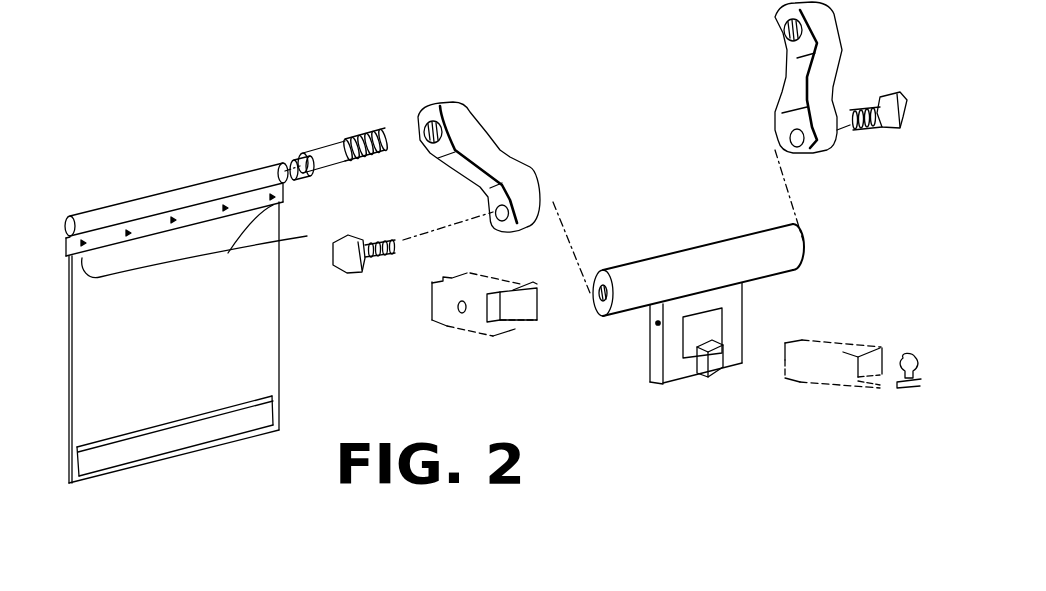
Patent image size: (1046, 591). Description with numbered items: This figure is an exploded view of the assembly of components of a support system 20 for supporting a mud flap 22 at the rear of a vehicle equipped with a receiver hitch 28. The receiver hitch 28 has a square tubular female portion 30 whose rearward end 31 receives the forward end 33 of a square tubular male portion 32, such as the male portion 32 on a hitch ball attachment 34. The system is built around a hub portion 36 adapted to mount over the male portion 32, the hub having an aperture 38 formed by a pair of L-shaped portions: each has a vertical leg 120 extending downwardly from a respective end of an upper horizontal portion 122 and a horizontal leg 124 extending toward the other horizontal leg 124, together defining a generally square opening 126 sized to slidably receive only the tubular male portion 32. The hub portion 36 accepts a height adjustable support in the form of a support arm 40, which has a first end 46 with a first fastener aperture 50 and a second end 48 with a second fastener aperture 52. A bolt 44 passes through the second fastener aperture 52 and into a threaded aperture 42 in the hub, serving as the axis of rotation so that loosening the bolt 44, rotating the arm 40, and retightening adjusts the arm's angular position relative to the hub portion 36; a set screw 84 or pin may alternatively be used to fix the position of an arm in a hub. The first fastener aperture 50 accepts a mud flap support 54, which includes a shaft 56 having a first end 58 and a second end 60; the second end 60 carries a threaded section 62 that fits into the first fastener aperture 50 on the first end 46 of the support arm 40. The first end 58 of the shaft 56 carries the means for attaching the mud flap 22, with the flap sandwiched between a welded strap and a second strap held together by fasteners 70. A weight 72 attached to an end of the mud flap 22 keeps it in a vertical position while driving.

The support system 20 is at (258, 73).
The mud flap 22 is at (166, 368).
The receiver hitch 28 is at (443, 327).
The square tubular female portion 30 is at (513, 327).
The rearward end 31 is at (520, 282).
The square tubular male portion 32 is at (800, 383).
The forward end 33 is at (808, 338).
The hitch ball attachment 34 is at (889, 374).
The hub portion 36 is at (650, 375).
The aperture 38 is at (733, 365).
The support arm 40 is at (527, 152).
The threaded aperture 42 is at (595, 298).
The bolt 44 is at (345, 290).
The first end 46 is at (467, 101).
The second end 48 is at (552, 200).
The first fastener aperture 50 is at (413, 135).
The second fastener aperture 52 is at (496, 209).
The mud flap support 54 is at (182, 186).
The shaft 56 is at (274, 166).
The first end 58 is at (80, 212).
The second end 60 is at (314, 153).
The threaded section 62 is at (365, 170).
The fasteners 70 is at (210, 241).
The weight 72 is at (193, 442).
The set screw 84 is at (658, 324).
The vertical leg 120 is at (755, 300).
The upper horizontal portion 122 is at (733, 235).
The horizontal leg 124 is at (755, 367).
The square opening 126 is at (723, 327).